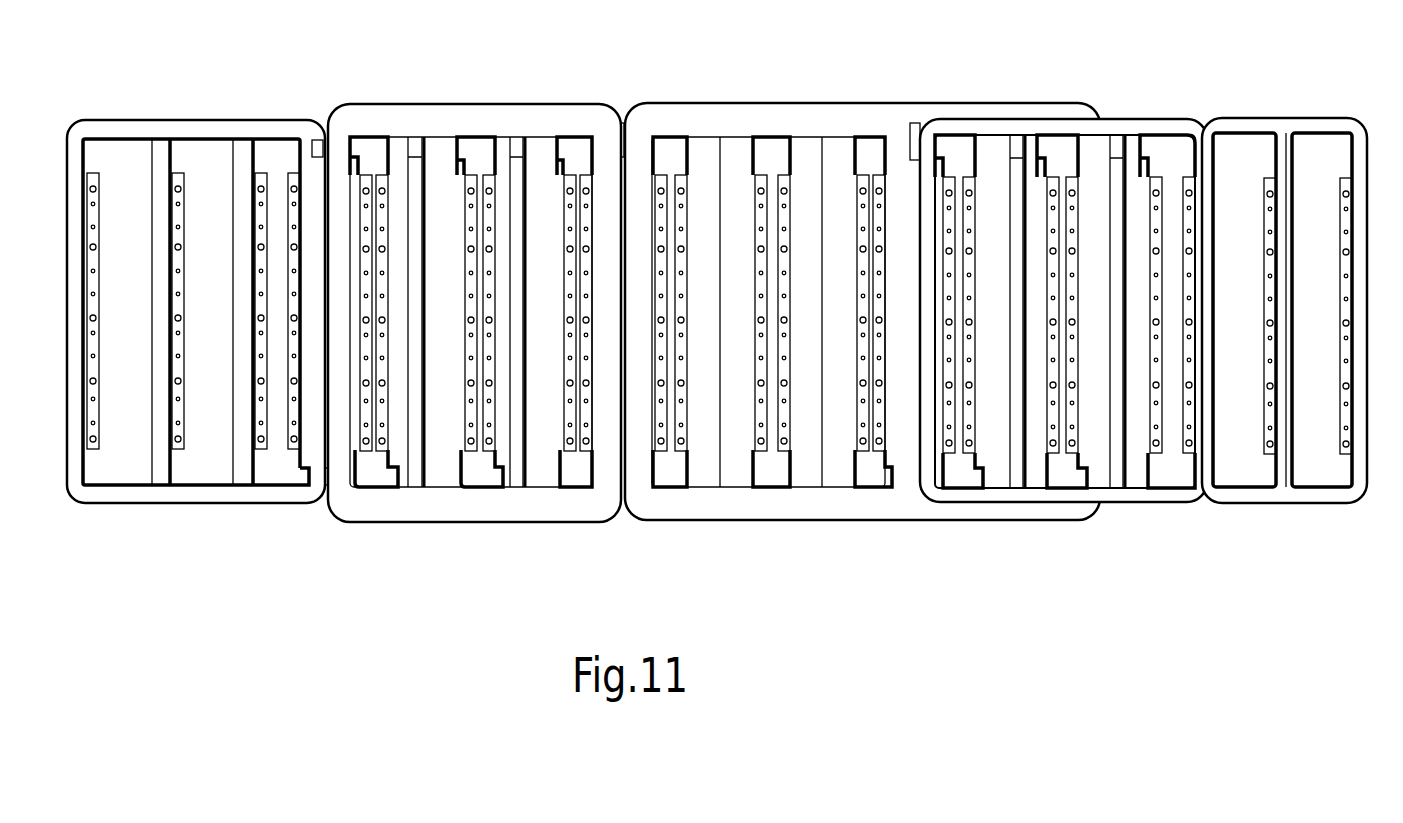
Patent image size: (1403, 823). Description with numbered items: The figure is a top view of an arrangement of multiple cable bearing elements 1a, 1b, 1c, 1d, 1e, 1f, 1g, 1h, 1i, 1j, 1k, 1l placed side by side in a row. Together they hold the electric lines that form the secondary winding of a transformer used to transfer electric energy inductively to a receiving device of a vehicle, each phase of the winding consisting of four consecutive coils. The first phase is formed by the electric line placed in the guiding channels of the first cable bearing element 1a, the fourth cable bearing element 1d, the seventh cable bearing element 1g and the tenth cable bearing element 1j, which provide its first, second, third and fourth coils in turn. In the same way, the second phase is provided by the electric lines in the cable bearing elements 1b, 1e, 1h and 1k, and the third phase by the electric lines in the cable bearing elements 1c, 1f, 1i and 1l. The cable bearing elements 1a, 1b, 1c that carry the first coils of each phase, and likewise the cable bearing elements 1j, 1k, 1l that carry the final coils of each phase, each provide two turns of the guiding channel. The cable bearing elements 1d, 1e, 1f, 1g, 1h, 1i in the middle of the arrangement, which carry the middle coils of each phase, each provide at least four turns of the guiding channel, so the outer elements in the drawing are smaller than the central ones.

The first cable bearing element 1a is at (77, 125).
The cable bearing element 1b is at (150, 158).
The cable bearing element 1c is at (233, 158).
The fourth cable bearing element 1d is at (377, 523).
The cable bearing element 1e is at (458, 473).
The cable bearing element 1f is at (542, 477).
The seventh cable bearing element 1g is at (800, 522).
The cable bearing element 1h is at (742, 472).
The cable bearing element 1i is at (848, 477).
The tenth cable bearing element 1j is at (978, 505).
The cable bearing element 1k is at (1292, 327).
The cable bearing element 1l is at (1237, 505).